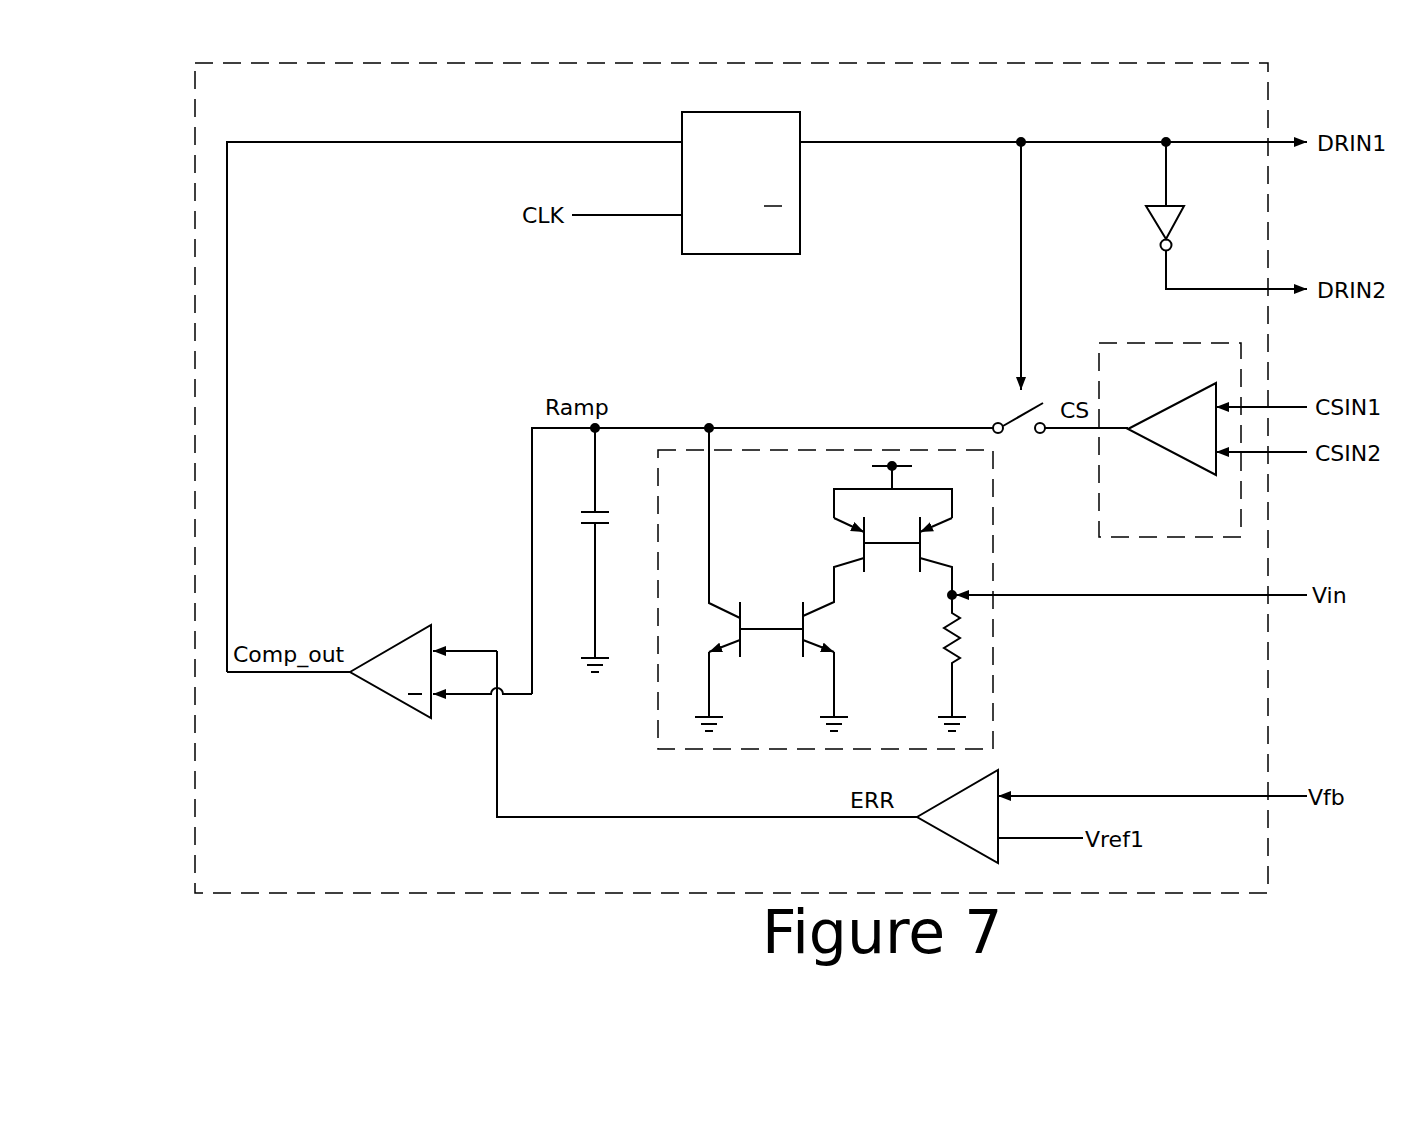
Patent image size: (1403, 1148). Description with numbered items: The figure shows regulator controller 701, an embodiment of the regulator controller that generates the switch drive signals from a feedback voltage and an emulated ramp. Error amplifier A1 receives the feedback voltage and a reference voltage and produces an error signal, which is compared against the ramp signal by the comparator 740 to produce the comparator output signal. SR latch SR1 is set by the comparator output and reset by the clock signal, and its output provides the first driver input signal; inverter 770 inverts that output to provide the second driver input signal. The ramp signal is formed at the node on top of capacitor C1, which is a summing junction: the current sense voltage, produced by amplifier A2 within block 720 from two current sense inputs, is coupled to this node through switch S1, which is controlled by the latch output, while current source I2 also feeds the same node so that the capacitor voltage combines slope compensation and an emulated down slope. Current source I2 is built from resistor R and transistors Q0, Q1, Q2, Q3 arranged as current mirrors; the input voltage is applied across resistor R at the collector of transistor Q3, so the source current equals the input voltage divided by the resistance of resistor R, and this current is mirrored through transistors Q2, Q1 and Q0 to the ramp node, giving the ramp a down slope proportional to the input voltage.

The regulator controller 701 is at (276, 871).
The current sense amplifier block 720 is at (1170, 440).
The comparator 740 is at (398, 637).
The inverter 770 is at (1176, 226).
The SR latch SR1 is at (741, 168).
The error amplifier A1 is at (957, 816).
The current sense amplifier A2 is at (1172, 429).
The capacitor C1 is at (611, 550).
The switch S1 is at (1060, 435).
The current source I2 is at (766, 494).
The transistor Q0 is at (708, 579).
The transistor Q1 is at (833, 666).
The transistor Q2 is at (833, 566).
The transistor Q3 is at (945, 556).
The resistor R is at (943, 661).